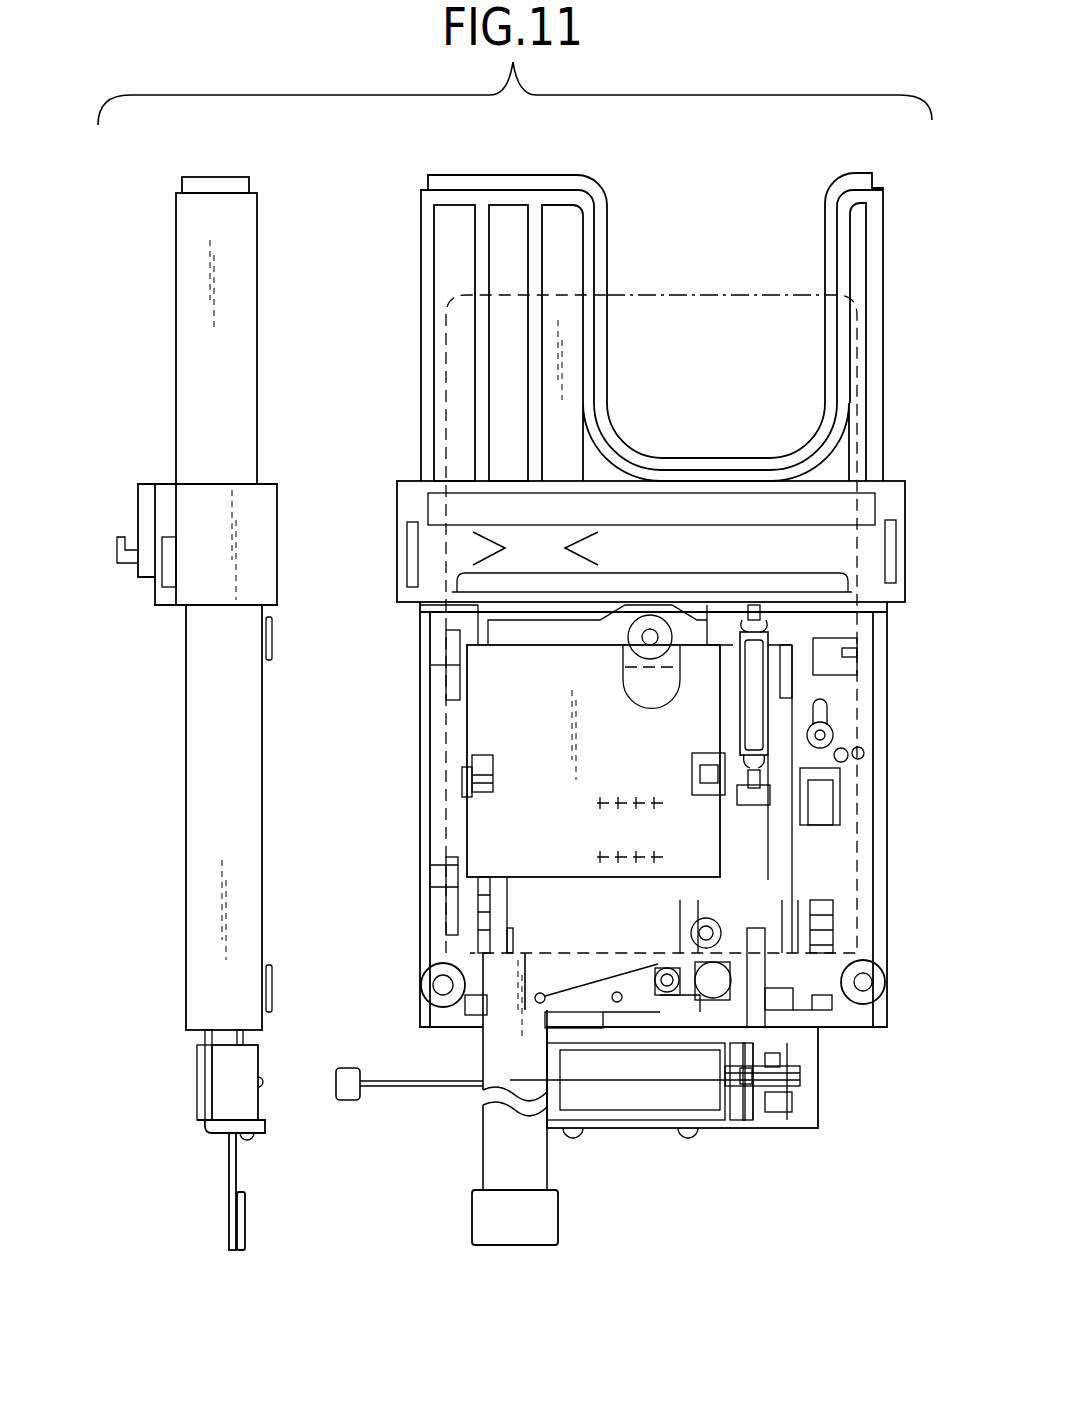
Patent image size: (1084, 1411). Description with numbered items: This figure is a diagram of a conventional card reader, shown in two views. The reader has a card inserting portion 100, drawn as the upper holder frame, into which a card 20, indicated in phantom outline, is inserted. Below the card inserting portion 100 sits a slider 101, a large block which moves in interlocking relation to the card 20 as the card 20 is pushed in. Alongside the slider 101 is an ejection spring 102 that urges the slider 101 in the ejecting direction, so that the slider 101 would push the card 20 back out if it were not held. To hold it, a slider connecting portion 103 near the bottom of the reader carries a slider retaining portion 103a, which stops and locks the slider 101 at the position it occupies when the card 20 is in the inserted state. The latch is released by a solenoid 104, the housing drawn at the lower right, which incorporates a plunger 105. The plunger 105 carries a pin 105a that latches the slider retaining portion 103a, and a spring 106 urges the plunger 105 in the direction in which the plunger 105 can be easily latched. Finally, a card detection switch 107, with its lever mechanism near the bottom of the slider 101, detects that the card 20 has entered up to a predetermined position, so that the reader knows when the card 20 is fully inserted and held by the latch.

The card inserting portion 100 is at (502, 257).
The card 20 is at (725, 324).
The slider 101 is at (485, 720).
The ejection spring 102 is at (740, 730).
The slider connecting portion 103 is at (787, 998).
The slider retaining portion 103a is at (792, 1102).
The solenoid 104 is at (665, 1100).
The plunger 105 is at (752, 1090).
The pin 105a is at (800, 1078).
The spring 106 is at (745, 1088).
The card detection switch 107 is at (682, 1008).